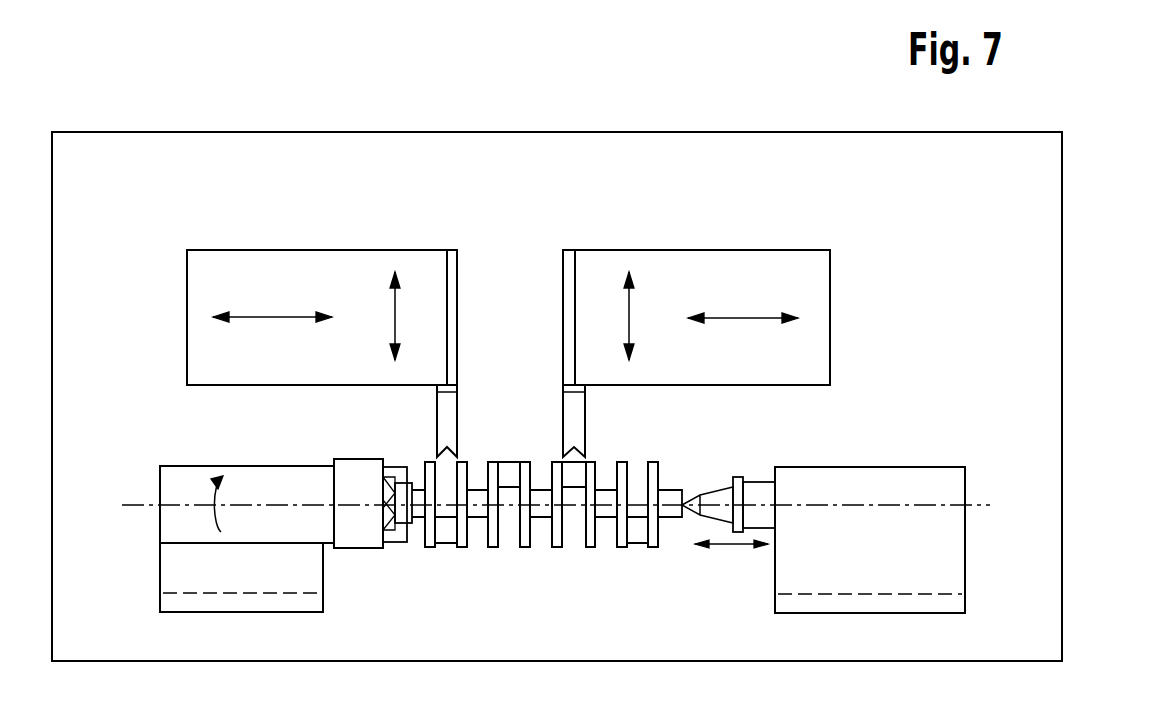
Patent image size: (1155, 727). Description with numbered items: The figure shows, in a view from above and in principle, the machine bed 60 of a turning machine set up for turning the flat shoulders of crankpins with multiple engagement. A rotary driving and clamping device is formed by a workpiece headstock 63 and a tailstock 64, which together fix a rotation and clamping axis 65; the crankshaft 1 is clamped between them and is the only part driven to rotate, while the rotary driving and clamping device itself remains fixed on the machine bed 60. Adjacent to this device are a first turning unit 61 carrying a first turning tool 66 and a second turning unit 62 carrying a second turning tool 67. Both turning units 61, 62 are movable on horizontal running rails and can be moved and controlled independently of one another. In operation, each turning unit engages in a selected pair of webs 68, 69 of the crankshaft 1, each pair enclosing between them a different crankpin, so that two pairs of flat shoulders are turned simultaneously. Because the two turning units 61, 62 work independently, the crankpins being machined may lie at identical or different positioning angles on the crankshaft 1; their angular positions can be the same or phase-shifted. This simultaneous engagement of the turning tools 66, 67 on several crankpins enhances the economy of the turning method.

The crankshaft 1 is at (531, 586).
The machine bed 60 is at (1036, 193).
The first turning unit 61 is at (350, 268).
The second turning unit 62 is at (697, 268).
The workpiece headstock 63 is at (250, 578).
The tailstock 64 is at (890, 577).
The rotation and clamping axis 65 is at (543, 505).
The first turning tool 66 is at (447, 418).
The second turning tool 67 is at (575, 420).
The pair of webs 68 is at (460, 546).
The pair of webs 69 is at (561, 546).